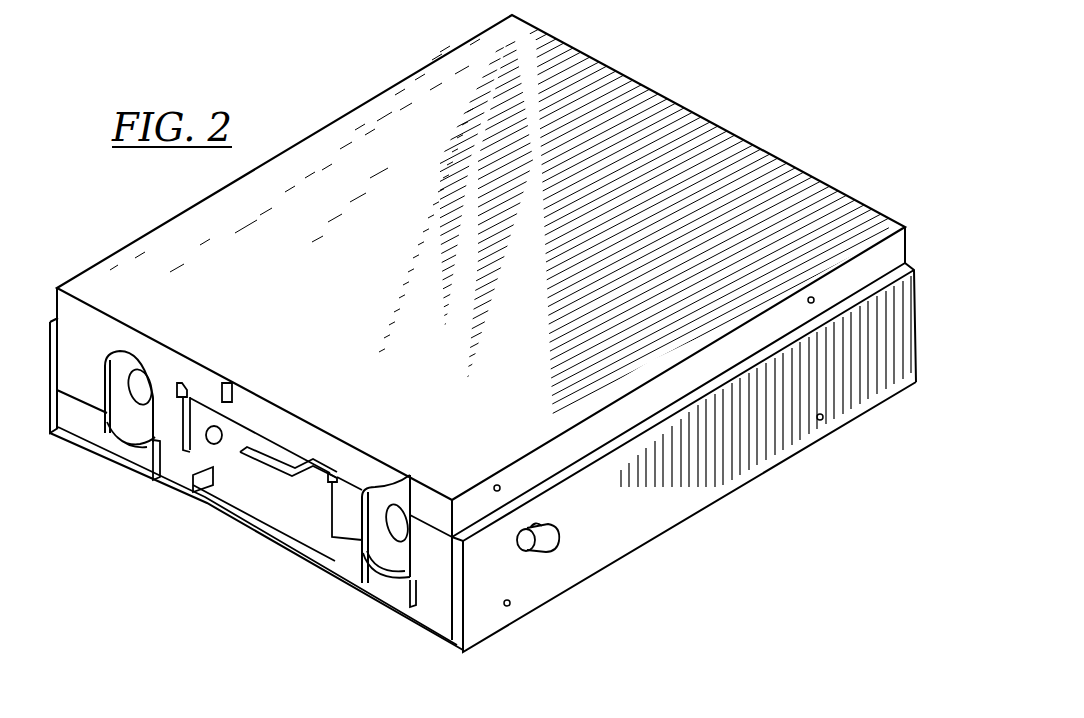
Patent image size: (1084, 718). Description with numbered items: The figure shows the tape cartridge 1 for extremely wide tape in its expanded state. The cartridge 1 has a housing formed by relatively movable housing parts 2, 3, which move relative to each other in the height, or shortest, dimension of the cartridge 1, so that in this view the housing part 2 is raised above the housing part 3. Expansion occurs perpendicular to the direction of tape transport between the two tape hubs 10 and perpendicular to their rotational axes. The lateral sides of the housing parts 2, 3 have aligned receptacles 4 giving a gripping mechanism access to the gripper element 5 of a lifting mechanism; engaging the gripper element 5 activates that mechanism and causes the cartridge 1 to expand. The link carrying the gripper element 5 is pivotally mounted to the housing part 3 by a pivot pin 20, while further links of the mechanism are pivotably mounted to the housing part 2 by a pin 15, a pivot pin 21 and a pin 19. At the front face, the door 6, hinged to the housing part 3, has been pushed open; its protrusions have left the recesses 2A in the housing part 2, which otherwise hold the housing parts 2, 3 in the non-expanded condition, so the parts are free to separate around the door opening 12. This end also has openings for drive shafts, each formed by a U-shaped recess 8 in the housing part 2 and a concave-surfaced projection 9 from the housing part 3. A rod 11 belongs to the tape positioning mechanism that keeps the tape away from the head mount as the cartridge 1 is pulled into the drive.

The tape cartridge 1 is at (742, 78).
The housing part 2 is at (760, 186).
The recess 2A is at (338, 472).
The housing part 3 is at (862, 383).
The receptacle 4 is at (545, 550).
The gripper element 5 is at (530, 527).
The door 6 is at (302, 520).
The U-shaped recess 8 is at (377, 488).
The projection 9 is at (378, 587).
The tape hub 10 is at (378, 537).
The rod 11 is at (213, 440).
The door opening 12 is at (258, 425).
The pin 15 is at (498, 485).
The pin 19 is at (815, 299).
The pivot pin 20 is at (517, 600).
The pivot pin 21 is at (825, 420).